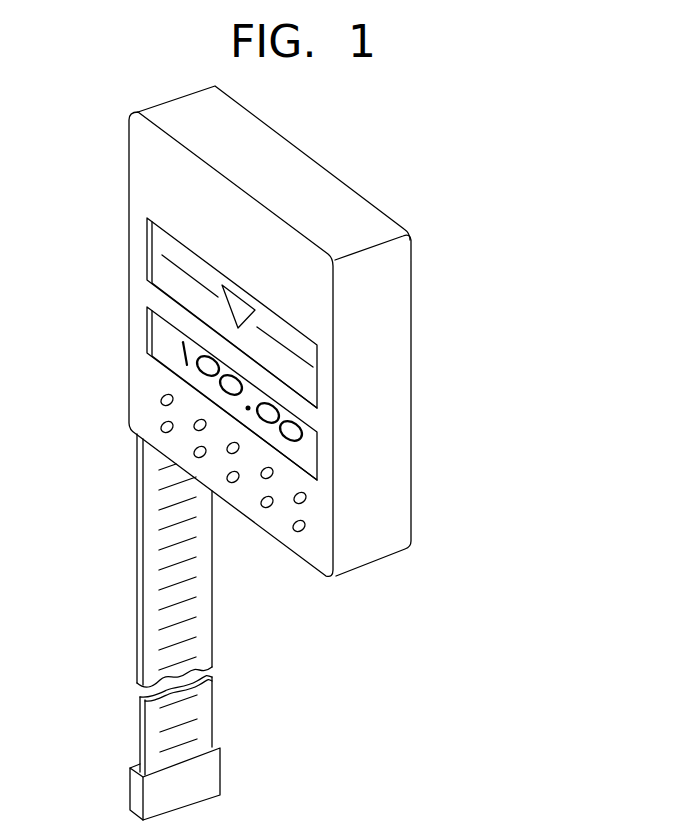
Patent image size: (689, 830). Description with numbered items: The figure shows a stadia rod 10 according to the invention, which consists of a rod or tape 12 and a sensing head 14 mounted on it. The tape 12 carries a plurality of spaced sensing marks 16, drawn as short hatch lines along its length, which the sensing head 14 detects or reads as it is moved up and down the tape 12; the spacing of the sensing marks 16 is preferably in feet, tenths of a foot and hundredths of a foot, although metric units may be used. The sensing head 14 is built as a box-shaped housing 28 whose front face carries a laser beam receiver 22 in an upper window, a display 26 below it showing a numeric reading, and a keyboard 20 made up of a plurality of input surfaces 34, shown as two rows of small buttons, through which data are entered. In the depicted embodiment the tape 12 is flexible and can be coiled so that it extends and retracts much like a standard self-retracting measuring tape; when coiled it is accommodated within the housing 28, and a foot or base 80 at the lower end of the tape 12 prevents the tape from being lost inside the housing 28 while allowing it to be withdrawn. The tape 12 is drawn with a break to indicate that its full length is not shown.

The stadia rod 10 is at (299, 350).
The tape 12 is at (158, 542).
The sensing head 14 is at (155, 179).
The sensing marks 16 is at (187, 703).
The keyboard 20 is at (150, 407).
The laser beam receiver 22 is at (160, 239).
The display 26 is at (160, 333).
The housing 28 is at (393, 518).
The input surfaces 34 is at (293, 533).
The foot or base 80 is at (212, 778).